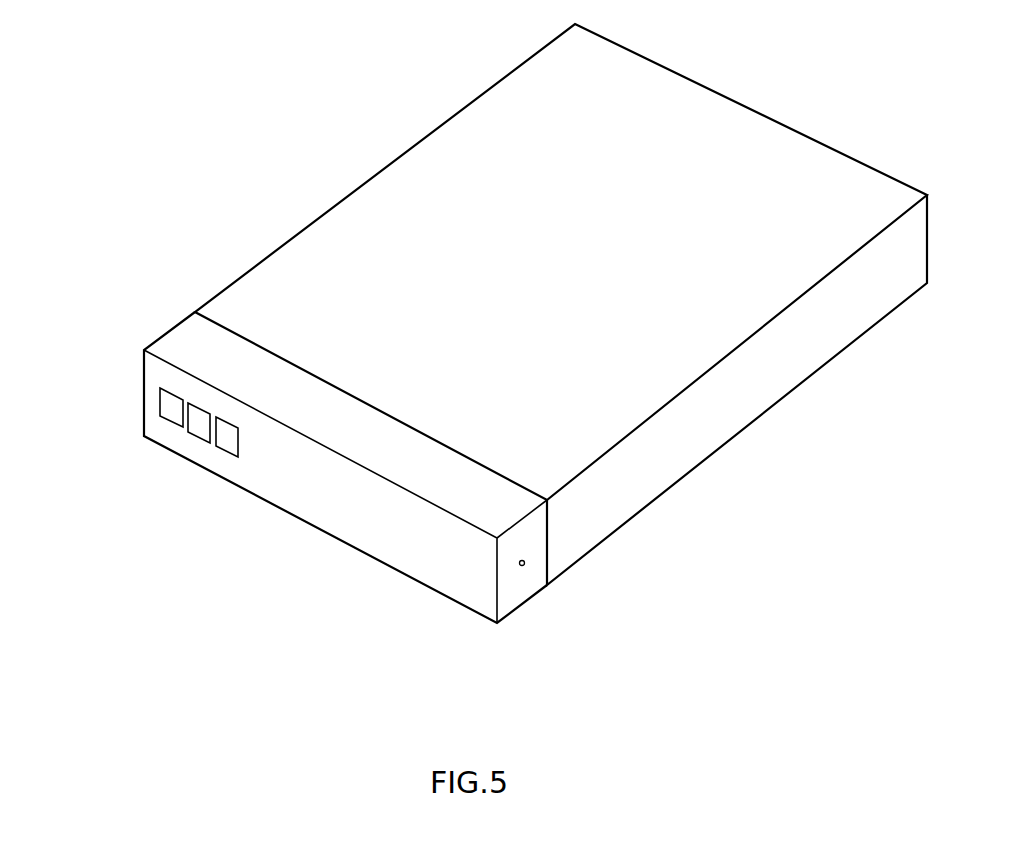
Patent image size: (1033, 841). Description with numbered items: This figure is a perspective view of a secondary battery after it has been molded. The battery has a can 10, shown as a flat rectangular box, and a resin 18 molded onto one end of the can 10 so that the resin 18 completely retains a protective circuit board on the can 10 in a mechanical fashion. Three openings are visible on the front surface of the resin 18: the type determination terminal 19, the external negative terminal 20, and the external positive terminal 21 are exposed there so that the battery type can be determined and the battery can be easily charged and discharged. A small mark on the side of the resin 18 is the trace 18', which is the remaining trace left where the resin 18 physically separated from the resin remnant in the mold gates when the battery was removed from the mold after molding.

The can 10 is at (390, 190).
The resin 18 is at (320, 500).
The trace 18' is at (595, 609).
The type determination terminal 19 is at (163, 408).
The external negative terminal 20 is at (197, 430).
The external positive terminal 21 is at (228, 440).